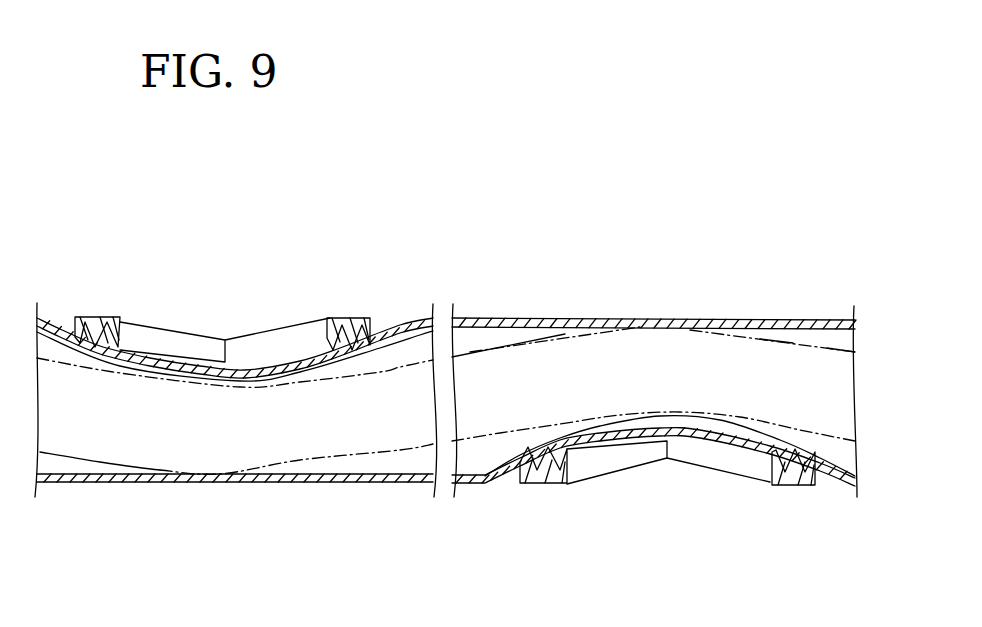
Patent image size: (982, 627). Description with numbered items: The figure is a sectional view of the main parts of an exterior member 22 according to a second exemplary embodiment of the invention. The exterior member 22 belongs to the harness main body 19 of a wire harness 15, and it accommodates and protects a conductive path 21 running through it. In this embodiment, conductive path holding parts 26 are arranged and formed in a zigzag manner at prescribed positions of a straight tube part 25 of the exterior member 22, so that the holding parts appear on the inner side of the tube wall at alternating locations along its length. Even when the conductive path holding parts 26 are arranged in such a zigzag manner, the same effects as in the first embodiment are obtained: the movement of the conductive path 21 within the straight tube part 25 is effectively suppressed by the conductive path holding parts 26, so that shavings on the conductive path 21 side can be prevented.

The wire harness 15 is at (517, 195).
The harness main body 19 is at (534, 236).
The conductive path 21 is at (791, 335).
The exterior member 22 is at (530, 318).
The straight tube part 25 is at (378, 484).
The conductive path holding parts 26 is at (263, 347).